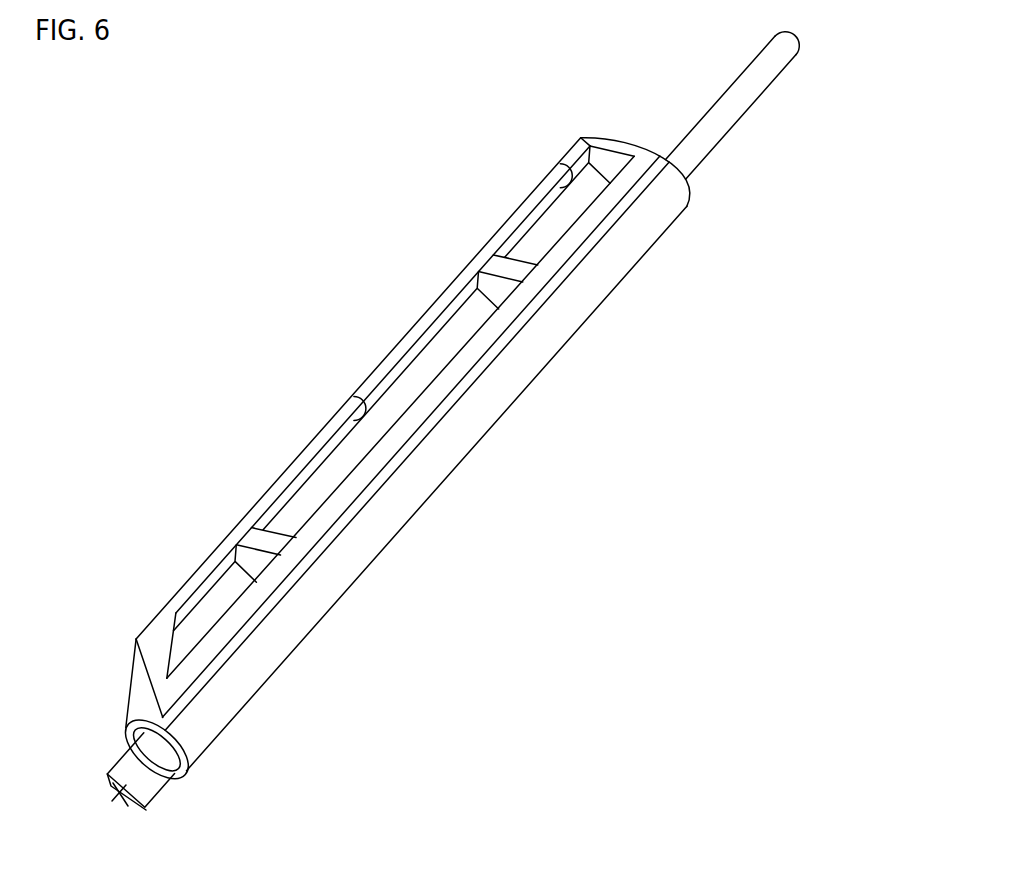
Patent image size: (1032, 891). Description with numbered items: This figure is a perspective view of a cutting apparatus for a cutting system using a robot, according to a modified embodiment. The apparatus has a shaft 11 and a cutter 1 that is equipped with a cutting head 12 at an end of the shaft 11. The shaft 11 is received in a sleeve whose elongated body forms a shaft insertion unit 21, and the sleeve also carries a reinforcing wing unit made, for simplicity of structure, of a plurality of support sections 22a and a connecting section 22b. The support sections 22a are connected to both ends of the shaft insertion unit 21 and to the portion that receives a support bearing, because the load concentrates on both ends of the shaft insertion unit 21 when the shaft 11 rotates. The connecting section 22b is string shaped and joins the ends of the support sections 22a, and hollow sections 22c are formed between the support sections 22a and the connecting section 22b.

The cutter 1 is at (112, 752).
The shaft 11 is at (769, 81).
The cutting head 12 is at (160, 785).
The shaft insertion unit 21 is at (358, 552).
The support sections 22a is at (509, 259).
The connecting section 22b is at (418, 332).
The hollow sections 22c is at (557, 165).